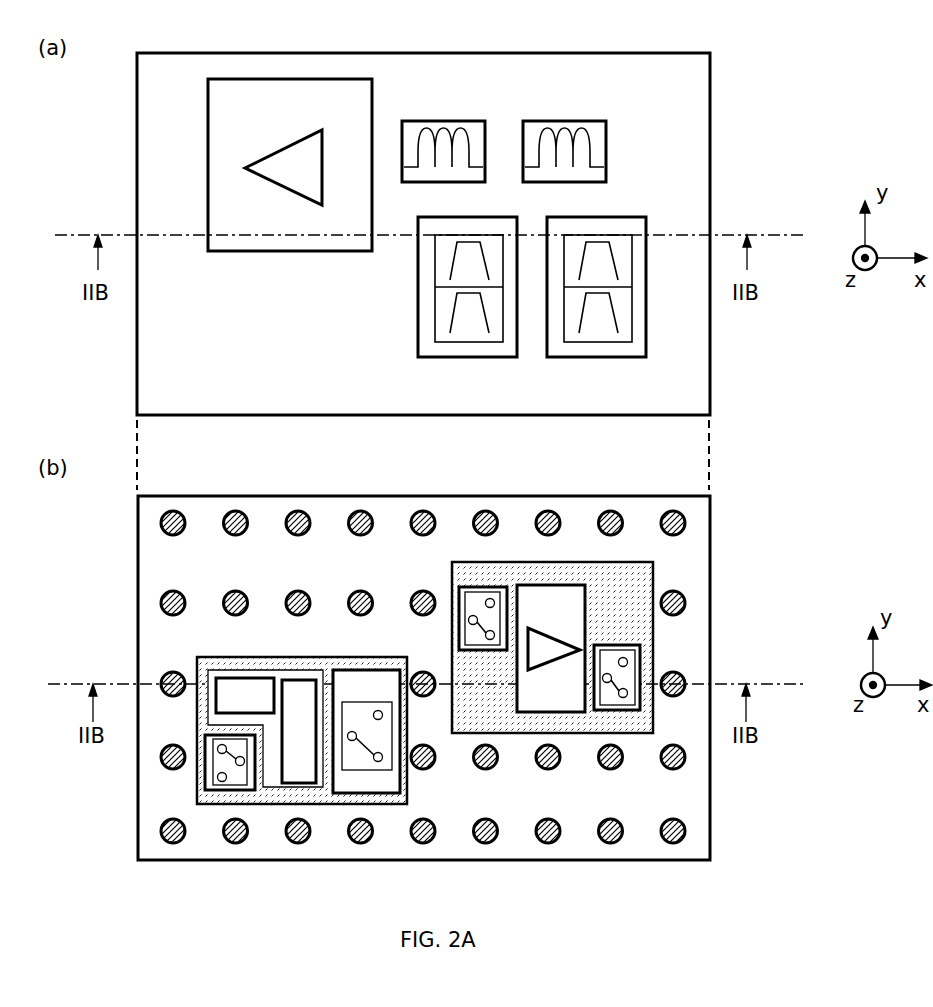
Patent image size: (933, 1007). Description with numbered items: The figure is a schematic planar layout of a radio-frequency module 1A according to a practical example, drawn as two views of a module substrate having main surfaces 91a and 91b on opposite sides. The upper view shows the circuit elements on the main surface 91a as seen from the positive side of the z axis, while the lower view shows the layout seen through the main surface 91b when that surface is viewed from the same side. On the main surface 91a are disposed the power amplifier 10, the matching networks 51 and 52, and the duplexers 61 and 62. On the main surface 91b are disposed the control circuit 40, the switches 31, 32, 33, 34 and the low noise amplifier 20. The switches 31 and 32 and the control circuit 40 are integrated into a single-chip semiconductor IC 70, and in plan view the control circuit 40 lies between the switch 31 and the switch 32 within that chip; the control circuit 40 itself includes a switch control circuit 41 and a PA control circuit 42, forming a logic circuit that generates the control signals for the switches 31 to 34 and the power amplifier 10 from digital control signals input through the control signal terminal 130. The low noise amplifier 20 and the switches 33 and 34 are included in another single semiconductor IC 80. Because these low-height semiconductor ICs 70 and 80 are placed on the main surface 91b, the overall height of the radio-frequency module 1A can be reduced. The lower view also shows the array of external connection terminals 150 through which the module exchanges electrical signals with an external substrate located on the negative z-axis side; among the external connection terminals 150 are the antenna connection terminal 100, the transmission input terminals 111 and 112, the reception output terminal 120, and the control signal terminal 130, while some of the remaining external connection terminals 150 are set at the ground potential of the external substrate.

The radio-frequency module 1A is at (751, 52).
The main surface 91a is at (698, 138).
The main surface 91b is at (697, 540).
The power amplifier 10 is at (280, 253).
The matching network 51 is at (455, 121).
The matching network 52 is at (576, 121).
The duplexer 61 is at (473, 358).
The duplexer 62 is at (583, 358).
The low noise amplifier 20 is at (555, 602).
The switch 34 is at (478, 585).
The switch 33 is at (613, 710).
The switch 31 is at (227, 786).
The switch 32 is at (378, 775).
The control circuit 40 is at (290, 663).
The switch control circuit 41 is at (305, 775).
The PA control circuit 42 is at (248, 682).
The semiconductor IC 70 is at (347, 657).
The semiconductor IC 80 is at (655, 584).
The antenna connection terminal 100 is at (683, 680).
The transmission input terminal 111 is at (160, 676).
The transmission input terminal 112 is at (160, 833).
The reception output terminal 120 is at (673, 511).
The control signal terminal 130 is at (295, 843).
The external connection terminals 150 is at (160, 524).